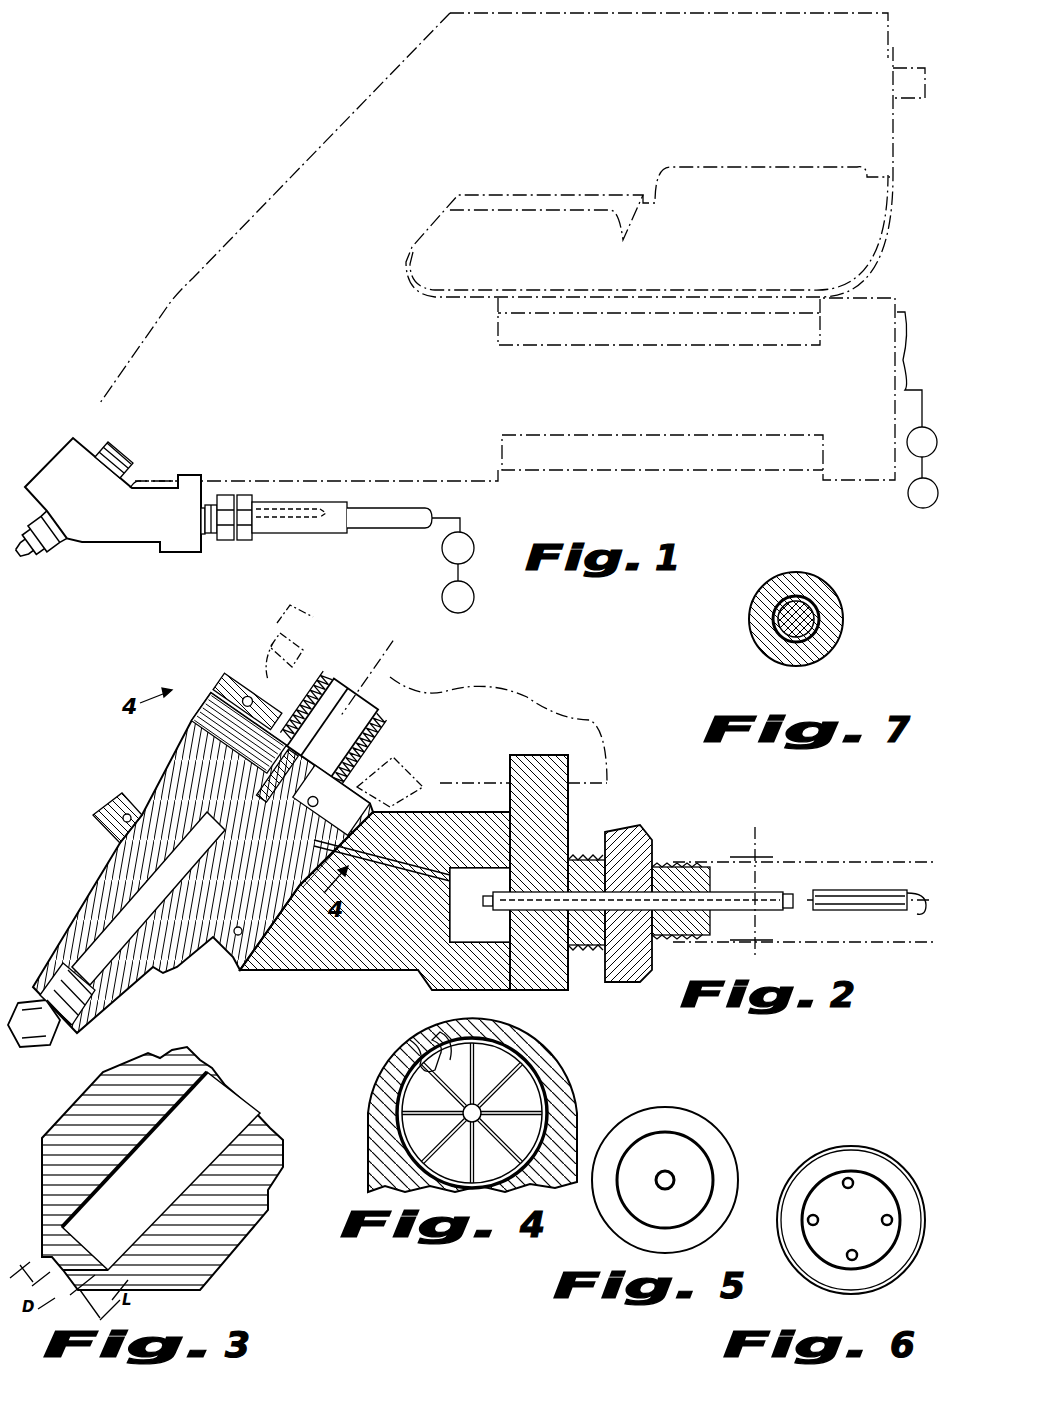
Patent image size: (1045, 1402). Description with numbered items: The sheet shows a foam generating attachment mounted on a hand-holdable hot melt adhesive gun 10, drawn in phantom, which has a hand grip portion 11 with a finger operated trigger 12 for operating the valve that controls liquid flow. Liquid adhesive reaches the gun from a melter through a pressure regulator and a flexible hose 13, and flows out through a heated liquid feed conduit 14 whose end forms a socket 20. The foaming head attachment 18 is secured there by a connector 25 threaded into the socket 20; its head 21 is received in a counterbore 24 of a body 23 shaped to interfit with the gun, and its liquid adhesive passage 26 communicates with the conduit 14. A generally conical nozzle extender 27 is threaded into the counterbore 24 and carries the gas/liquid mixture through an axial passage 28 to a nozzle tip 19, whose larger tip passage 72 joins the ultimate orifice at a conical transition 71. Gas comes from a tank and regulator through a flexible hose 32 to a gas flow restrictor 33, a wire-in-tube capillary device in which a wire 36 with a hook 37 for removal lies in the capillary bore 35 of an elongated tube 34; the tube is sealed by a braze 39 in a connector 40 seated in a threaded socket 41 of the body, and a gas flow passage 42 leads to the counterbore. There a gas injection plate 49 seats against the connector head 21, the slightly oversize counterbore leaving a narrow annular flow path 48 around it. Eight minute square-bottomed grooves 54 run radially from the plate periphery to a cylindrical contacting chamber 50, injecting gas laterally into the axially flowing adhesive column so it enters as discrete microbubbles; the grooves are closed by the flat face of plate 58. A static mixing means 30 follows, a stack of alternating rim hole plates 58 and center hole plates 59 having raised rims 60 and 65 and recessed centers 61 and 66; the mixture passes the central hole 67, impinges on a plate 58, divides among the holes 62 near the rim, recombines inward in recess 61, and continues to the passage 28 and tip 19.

In FIG. 1, the hot melt liquid adhesive gun 10 is at (288, 170).
In FIG. 2, the hot melt liquid adhesive gun 10 is at (513, 697).
In FIG. 3, the hot melt liquid adhesive gun 10 is at (75, 1258).
In FIG. 1, the hand grip portion 11 is at (738, 162).
In FIG. 1, the finger operated trigger 12 is at (523, 212).
In FIG. 1, the flexible hose 13 is at (912, 320).
In FIG. 1, the liquid feed conduit 14 is at (120, 448).
In FIG. 2, the liquid feed conduit 14 is at (397, 673).
In FIG. 1, the foaming head attachment 18 is at (65, 472).
In FIG. 2, the foaming head attachment 18 is at (122, 748).
In FIG. 1, the nozzle tip 19 is at (20, 558).
In FIG. 2, the nozzle tip 19 is at (71, 1091).
In FIG. 3, the nozzle tip 19 is at (207, 1255).
In FIG. 1, the socket 20 is at (130, 467).
In FIG. 2, the socket 20 is at (382, 732).
In FIG. 2, the connector head 21 is at (207, 708).
In FIG. 1, the body 23 is at (123, 530).
In FIG. 2, the body 23 is at (340, 970).
In FIG. 4, the body 23 is at (385, 1082).
In FIG. 2, the counterbore 24 is at (338, 794).
In FIG. 4, the counterbore 24 is at (532, 1070).
In FIG. 1, the connector 25 is at (107, 444).
In FIG. 2, the connector 25 is at (337, 672).
In FIG. 2, the liquid adhesive passage 26 is at (340, 727).
In FIG. 1, the nozzle extender 27 is at (35, 533).
In FIG. 2, the nozzle extender 27 is at (116, 887).
In FIG. 2, the axial passage 28 is at (152, 912).
In FIG. 2, the static mixing means 30 is at (254, 857).
In FIG. 1, the flexible hose 32 is at (417, 503).
In FIG. 2, the flexible hose 32 is at (877, 840).
In FIG. 1, the gas flow restrictor 33 is at (280, 512).
In FIG. 7, the gas flow restrictor 33 is at (832, 568).
In FIG. 2, the gas flow restrictor 33 is at (768, 887).
In FIG. 1, the elongated tube 34 is at (277, 520).
In FIG. 7, the elongated tube 34 is at (830, 602).
In FIG. 2, the elongated tube 34 is at (853, 890).
In FIG. 7, the capillary bore 35 is at (823, 617).
In FIG. 2, the capillary bore 35 is at (813, 906).
In FIG. 7, the wire 36 is at (780, 632).
In FIG. 2, the wire 36 is at (790, 908).
In FIG. 2, the hook or bent portion 37 is at (918, 916).
In FIG. 2, the braze 39 is at (498, 887).
In FIG. 1, the connector 40 is at (212, 534).
In FIG. 2, the connector 40 is at (583, 866).
In FIG. 2, the threaded socket 41 is at (480, 860).
In FIG. 2, the gas flow passage 42 is at (392, 860).
In FIG. 2, the annular flow path 48 is at (418, 780).
In FIG. 4, the annular flow path 48 is at (517, 1058).
In FIG. 2, the gas injection plate 49 is at (273, 792).
In FIG. 4, the gas injection plate 49 is at (514, 1093).
In FIG. 2, the contacting chamber 50 is at (255, 736).
In FIG. 4, the contacting chamber 50 is at (475, 1122).
In FIG. 2, the gas introduction grooves 54 is at (244, 735).
In FIG. 4, the gas introduction grooves 54 is at (430, 1030).
In FIG. 2, the rim hole plate 58 is at (195, 742).
In FIG. 6, the rim hole plate 58 is at (888, 1160).
In FIG. 2, the center hole plate 59 is at (200, 712).
In FIG. 5, the center hole plate 59 is at (704, 1116).
In FIG. 6, the raised peripheral rim 60 is at (836, 1158).
In FIG. 6, the recessed central portion 61 is at (856, 1228).
In FIG. 6, the holes 62 is at (855, 1250).
In FIG. 5, the raised peripheral rim 65 is at (718, 1148).
In FIG. 5, the recessed central portion 66 is at (672, 1163).
In FIG. 5, the central hole 67 is at (661, 1189).
In FIG. 3, the conical transition 71 is at (100, 1225).
In FIG. 3, the tip passage 72 is at (211, 1143).